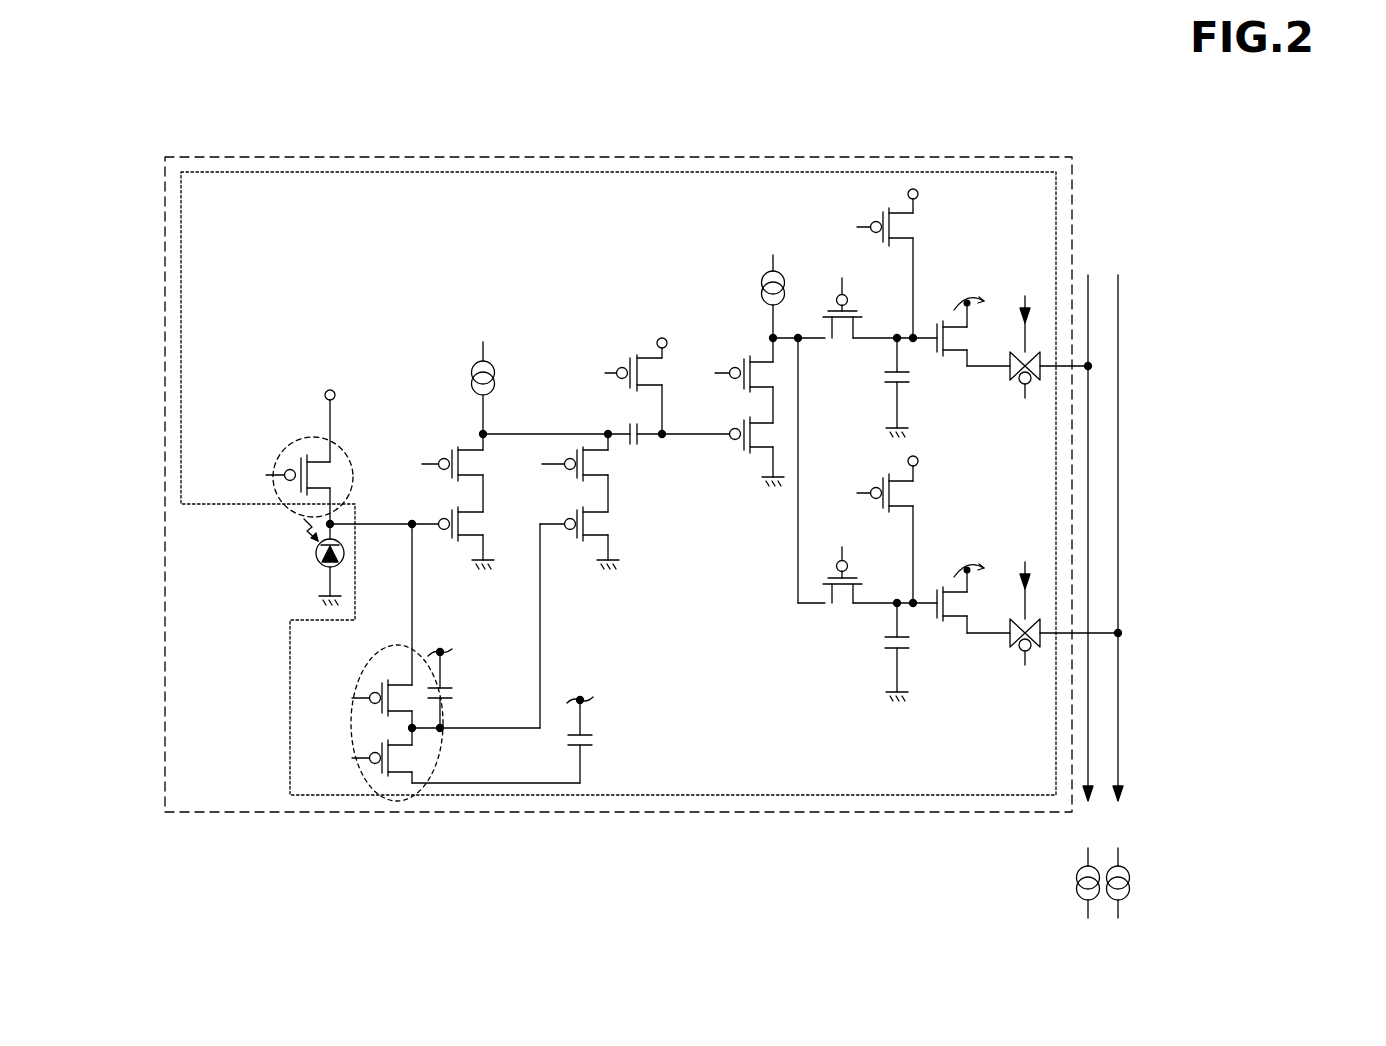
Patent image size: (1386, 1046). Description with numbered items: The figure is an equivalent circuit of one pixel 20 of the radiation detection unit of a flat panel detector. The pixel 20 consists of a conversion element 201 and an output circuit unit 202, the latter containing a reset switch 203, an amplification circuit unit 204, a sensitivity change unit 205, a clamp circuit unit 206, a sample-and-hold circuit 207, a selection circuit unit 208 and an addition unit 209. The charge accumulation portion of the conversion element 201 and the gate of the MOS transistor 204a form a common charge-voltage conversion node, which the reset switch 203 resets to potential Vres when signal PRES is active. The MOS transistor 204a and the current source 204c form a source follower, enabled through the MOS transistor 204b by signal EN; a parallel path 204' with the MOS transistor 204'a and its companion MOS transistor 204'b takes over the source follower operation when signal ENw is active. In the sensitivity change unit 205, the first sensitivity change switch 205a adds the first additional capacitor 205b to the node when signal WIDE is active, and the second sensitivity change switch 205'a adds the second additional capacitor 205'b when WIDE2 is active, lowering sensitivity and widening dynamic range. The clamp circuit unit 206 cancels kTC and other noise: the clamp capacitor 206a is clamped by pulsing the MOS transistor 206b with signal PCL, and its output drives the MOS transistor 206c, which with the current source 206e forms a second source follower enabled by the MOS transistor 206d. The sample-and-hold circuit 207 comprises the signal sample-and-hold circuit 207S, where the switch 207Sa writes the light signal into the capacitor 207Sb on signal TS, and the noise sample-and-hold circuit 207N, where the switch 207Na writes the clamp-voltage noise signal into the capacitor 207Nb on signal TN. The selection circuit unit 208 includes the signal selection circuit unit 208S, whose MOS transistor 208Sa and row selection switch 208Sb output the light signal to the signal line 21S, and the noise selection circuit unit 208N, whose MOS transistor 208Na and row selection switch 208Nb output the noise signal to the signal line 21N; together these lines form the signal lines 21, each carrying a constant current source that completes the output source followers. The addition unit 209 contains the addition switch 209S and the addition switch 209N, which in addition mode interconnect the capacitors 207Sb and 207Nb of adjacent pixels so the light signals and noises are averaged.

The pixel 20 is at (165, 258).
The conversion element 201 is at (318, 562).
The output circuit unit 202 is at (258, 168).
The reset switch 203 is at (298, 448).
The amplification circuit unit 204 is at (506, 635).
The MOS transistor 204a is at (482, 455).
The MOS transistor 204b is at (482, 527).
The current source 204c is at (545, 437).
The second amplifier 204' is at (646, 668).
The MOS transistor 204'a is at (606, 648).
The amplifier transistor 204'b is at (670, 663).
The sensitivity change unit 205 is at (483, 516).
The first sensitivity change switch 205a is at (392, 682).
The first additional capacitor 205b is at (428, 686).
The second sensitivity change switch 205'a is at (375, 537).
The reverse capacitor 205'b is at (570, 540).
The clamp circuit unit 206 is at (678, 86).
The clamp capacitor 206a is at (628, 372).
The MOS transistor 206b is at (633, 422).
The MOS transistor 206c is at (650, 372).
The MOS transistor 206d is at (741, 357).
The current source 206e is at (763, 368).
The sample-and-hold circuit 207 is at (938, 43).
The signal sample-and-hold circuit 207S is at (822, 86).
The switch 207Sa is at (843, 326).
The capacitor 207Sb is at (893, 372).
The noise sample-and-hold circuit 207N is at (968, 86).
The switch 207Na is at (847, 586).
The capacitor 207Nb is at (900, 636).
The selection circuit unit 208 is at (1312, 345).
The signal selection circuit unit 208S is at (1232, 330).
The MOS transistor 208Sa is at (966, 338).
The row selection switch 208Sb is at (1032, 382).
The noise selection circuit unit 208N is at (1232, 596).
The MOS transistor 208Na is at (966, 602).
The row selection switch 208Nb is at (1032, 648).
The addition unit 209 is at (1177, 170).
The addition switch 209S is at (910, 228).
The addition switch 209N is at (912, 492).
The signal lines 21 is at (1219, 703).
The signal line 21S is at (1088, 718).
The signal line 21N is at (1118, 762).